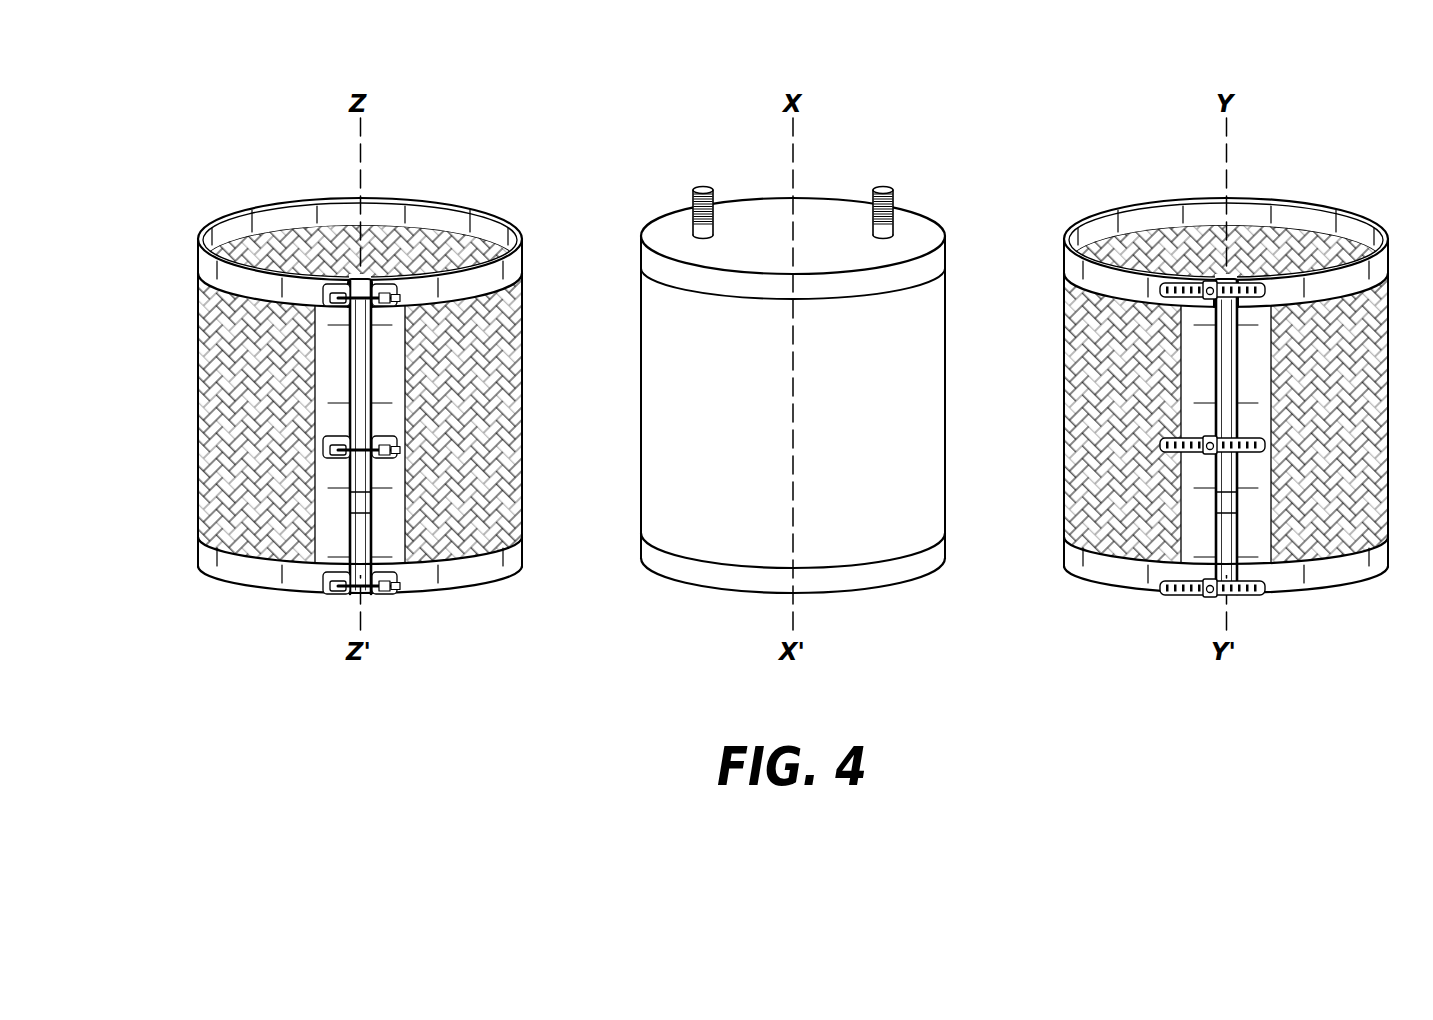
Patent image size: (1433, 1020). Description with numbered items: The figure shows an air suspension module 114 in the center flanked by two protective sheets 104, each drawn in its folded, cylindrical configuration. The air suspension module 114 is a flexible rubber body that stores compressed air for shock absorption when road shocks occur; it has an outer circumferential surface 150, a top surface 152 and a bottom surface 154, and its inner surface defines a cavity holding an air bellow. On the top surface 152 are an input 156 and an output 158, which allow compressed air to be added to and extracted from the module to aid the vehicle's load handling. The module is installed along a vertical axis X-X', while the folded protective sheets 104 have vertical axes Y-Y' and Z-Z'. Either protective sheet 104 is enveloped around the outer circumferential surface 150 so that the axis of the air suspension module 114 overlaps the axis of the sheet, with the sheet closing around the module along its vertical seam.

The protective sheet 104 is at (216, 171).
The air suspension module 114 is at (821, 359).
The outer circumferential surface 150 is at (945, 351).
The top surface 152 is at (838, 218).
The bottom surface 154 is at (905, 583).
The input 156 is at (699, 197).
The output 158 is at (887, 197).